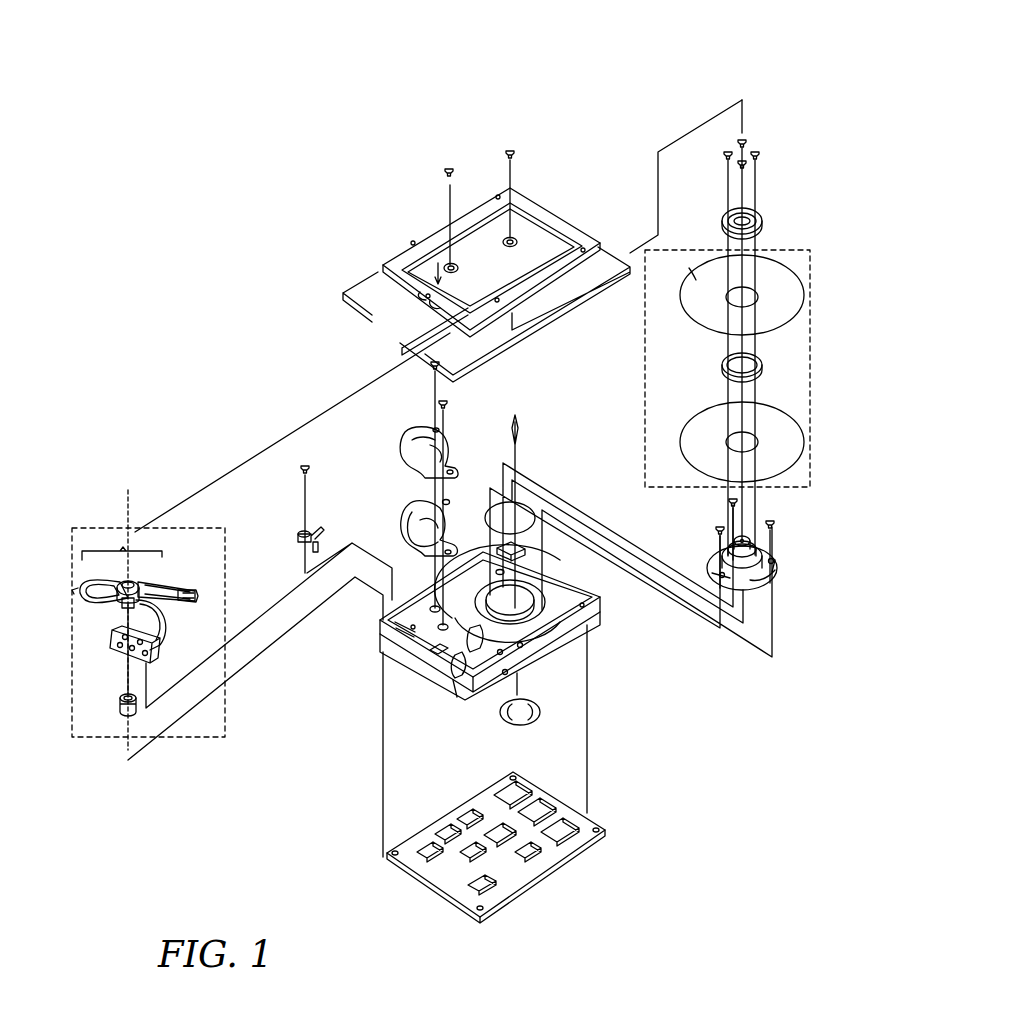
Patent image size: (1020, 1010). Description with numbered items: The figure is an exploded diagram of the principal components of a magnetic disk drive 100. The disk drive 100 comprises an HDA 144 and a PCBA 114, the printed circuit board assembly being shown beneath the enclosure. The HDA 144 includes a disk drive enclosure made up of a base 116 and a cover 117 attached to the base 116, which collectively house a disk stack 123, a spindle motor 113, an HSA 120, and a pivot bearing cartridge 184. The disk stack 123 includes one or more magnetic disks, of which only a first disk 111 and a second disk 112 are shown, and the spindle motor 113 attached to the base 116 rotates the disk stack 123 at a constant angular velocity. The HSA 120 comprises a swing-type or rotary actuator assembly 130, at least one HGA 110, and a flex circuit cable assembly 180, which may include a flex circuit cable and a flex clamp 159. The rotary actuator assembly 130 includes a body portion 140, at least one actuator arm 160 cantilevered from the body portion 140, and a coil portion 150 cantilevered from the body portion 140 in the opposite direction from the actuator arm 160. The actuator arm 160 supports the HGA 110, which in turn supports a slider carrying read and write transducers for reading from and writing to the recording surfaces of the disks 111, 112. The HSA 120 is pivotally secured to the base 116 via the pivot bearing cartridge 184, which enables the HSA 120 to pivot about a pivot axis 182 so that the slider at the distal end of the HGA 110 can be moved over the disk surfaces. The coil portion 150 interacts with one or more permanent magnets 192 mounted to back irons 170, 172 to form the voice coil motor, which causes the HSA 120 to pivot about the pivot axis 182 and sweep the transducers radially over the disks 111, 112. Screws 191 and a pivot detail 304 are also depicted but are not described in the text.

The magnetic disk drive 100 is at (285, 69).
The HGA 110 is at (193, 592).
The first disk 111 is at (687, 422).
The second disk 112 is at (697, 322).
The spindle motor 113 is at (718, 562).
The PCBA 114 is at (537, 878).
The base 116 is at (590, 630).
The cover 117 is at (400, 252).
The HSA 120 is at (104, 526).
The disk stack 123 is at (645, 417).
The rotary actuator assembly 130 is at (122, 545).
The body portion 140 is at (134, 588).
The HDA 144 is at (678, 765).
The coil portion 150 is at (95, 605).
The flex clamp 159 is at (112, 649).
The actuator arm 160 is at (172, 600).
The back iron 170 is at (432, 442).
The back iron 172 is at (470, 494).
The flex circuit cable assembly 180 is at (172, 647).
The pivot axis 182 is at (128, 496).
The pivot bearing cartridge 184 is at (118, 702).
The screws 191 is at (452, 168).
The permanent magnets 192 is at (420, 520).
The pivot cap 304 is at (122, 586).